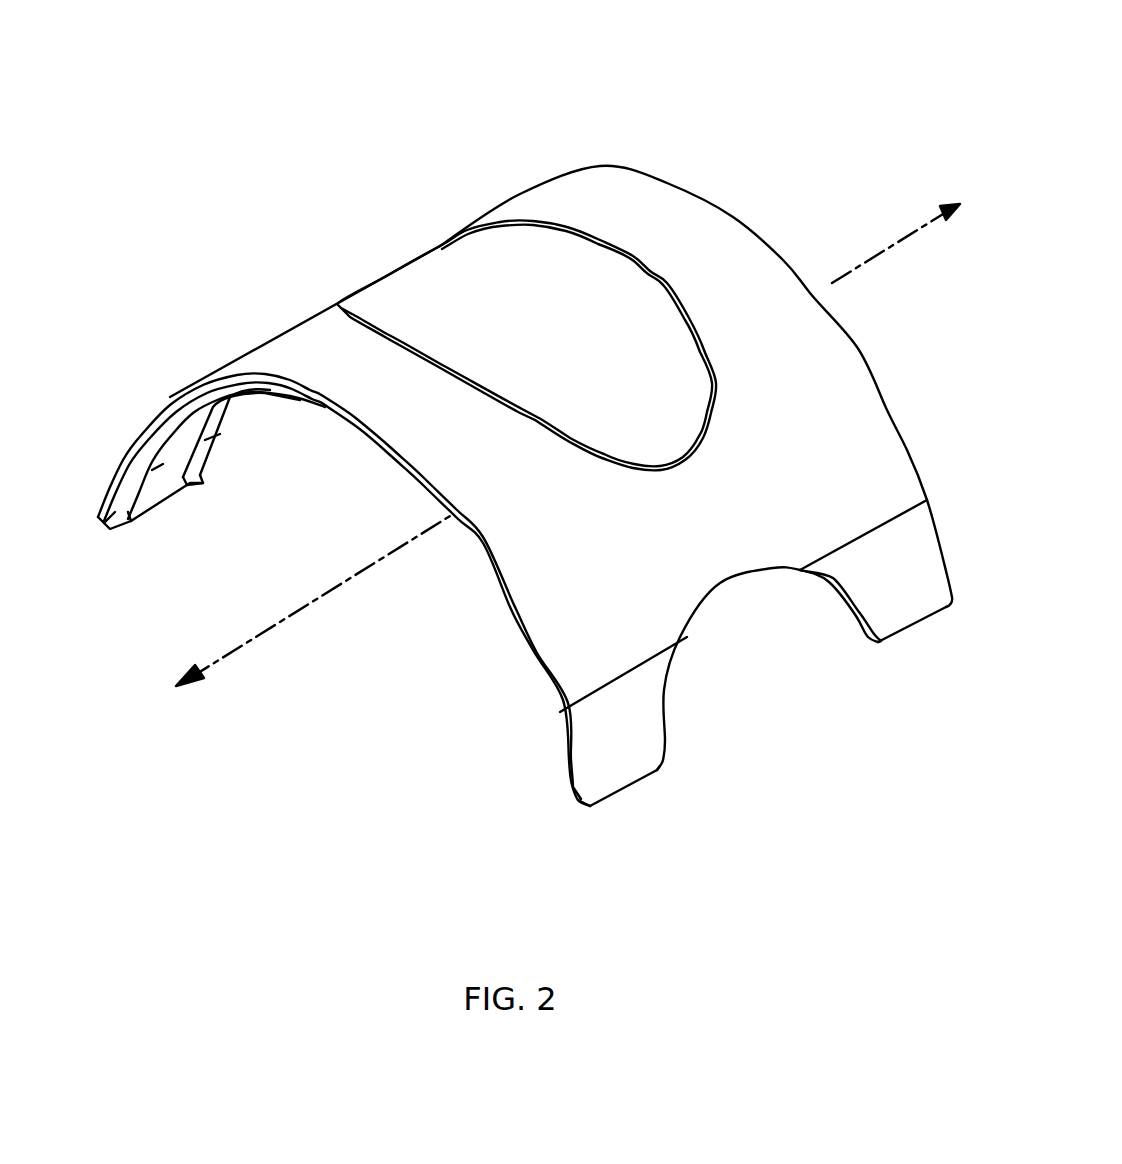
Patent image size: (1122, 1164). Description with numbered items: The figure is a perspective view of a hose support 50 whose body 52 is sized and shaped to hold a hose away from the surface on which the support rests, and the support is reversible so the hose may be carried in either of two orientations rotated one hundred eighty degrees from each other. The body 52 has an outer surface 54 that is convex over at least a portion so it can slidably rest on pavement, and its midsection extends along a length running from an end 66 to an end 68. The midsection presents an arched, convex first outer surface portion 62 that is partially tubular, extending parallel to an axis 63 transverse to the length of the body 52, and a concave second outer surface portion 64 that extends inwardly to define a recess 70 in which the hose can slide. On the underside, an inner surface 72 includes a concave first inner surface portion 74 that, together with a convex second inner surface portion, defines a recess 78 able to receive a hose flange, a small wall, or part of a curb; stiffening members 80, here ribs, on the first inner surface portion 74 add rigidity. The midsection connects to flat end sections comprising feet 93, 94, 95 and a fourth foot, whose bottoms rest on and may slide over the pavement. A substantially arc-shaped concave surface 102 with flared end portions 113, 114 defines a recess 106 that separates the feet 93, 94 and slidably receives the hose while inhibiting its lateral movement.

The hose support 50 is at (499, 446).
The body 52 is at (855, 346).
The outer surface 54 is at (598, 563).
The first outer surface portion 62 is at (754, 498).
The axis 63 is at (237, 644).
The second outer surface portion 64 is at (586, 371).
The end 66 is at (622, 796).
The end 68 is at (166, 505).
The recess 70 is at (558, 288).
The inner surface 72 is at (348, 422).
The first inner surface portion 74 is at (509, 611).
The recess 78 is at (330, 555).
The stiffening members 80 is at (208, 470).
The foot 93 is at (645, 777).
The foot 94 is at (907, 628).
The foot 95 is at (100, 493).
The concave surface 102 is at (826, 592).
The recess 106 is at (767, 680).
The flared end portion 113 is at (668, 761).
The flared end portion 114 is at (866, 645).